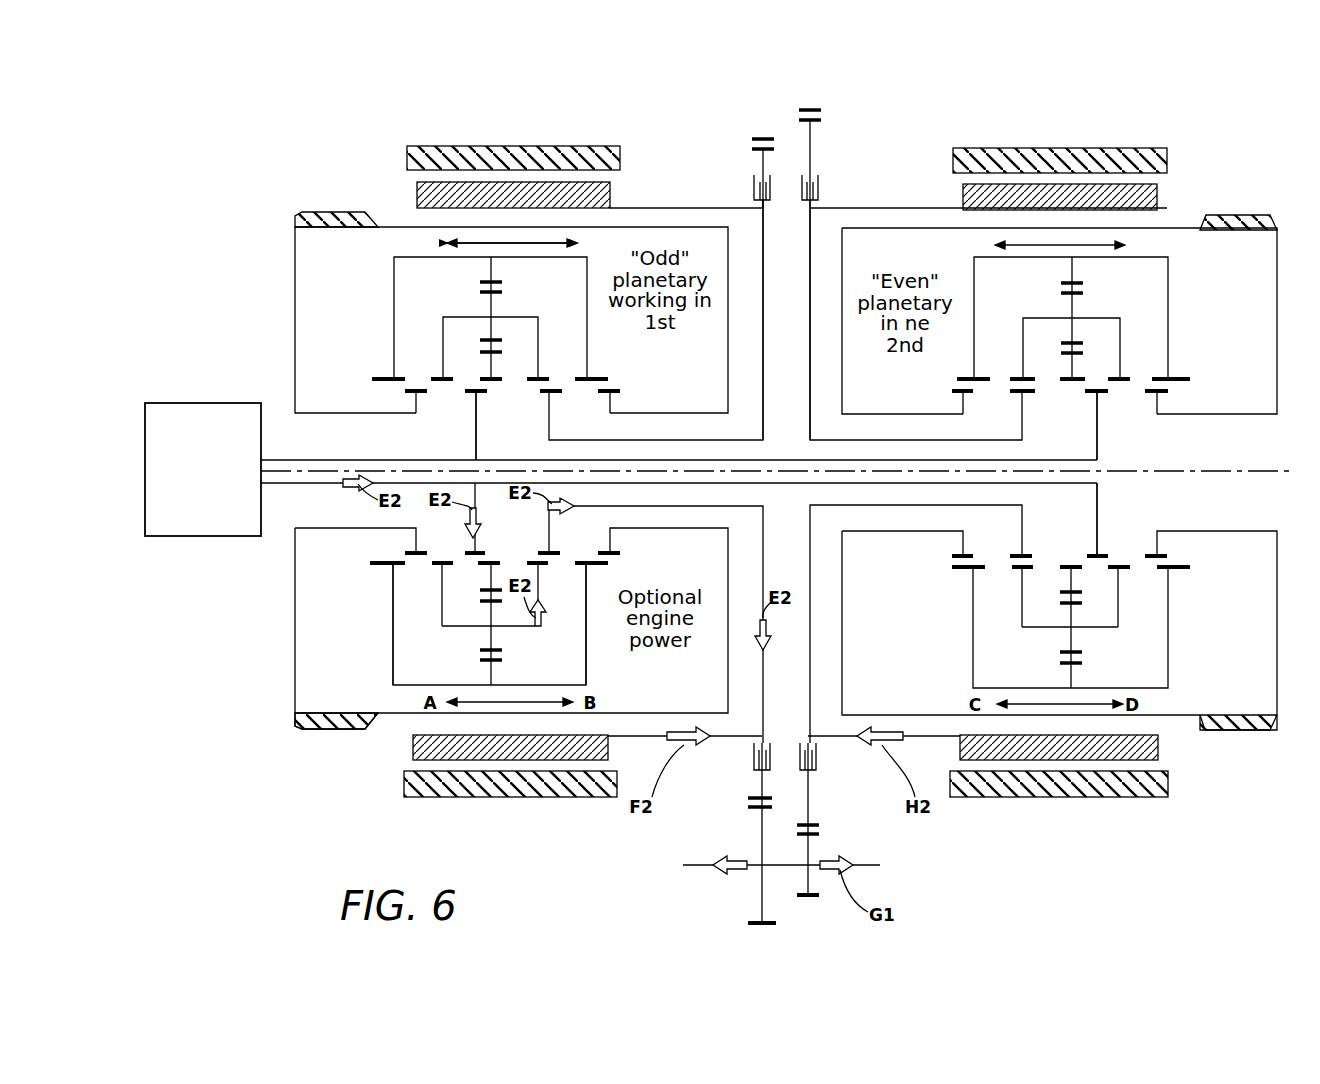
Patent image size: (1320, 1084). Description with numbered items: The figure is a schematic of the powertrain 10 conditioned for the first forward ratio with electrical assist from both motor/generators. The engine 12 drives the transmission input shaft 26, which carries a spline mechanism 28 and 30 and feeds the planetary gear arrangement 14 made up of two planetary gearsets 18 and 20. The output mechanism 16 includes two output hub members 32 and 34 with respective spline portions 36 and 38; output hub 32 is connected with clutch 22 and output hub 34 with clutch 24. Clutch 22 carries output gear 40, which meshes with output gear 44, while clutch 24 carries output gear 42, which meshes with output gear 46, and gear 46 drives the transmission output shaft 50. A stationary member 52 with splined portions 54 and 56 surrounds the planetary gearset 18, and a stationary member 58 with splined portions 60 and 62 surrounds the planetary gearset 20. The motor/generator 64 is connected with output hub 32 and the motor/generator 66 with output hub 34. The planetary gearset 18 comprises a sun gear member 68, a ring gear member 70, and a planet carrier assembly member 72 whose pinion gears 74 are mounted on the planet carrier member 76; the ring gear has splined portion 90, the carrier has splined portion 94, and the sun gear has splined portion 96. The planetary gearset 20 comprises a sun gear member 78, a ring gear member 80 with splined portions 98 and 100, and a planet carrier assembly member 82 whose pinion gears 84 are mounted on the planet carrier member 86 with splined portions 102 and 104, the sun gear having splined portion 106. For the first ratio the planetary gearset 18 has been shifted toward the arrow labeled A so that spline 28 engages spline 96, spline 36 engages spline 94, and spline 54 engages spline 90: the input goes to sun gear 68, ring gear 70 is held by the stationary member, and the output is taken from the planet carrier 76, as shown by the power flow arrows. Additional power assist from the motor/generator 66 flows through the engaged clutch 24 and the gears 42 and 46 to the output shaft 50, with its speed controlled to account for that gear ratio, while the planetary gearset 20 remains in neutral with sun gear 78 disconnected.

The powertrain 10 is at (216, 320).
The engine 12 is at (213, 400).
The planetary gear arrangement 14 is at (777, 127).
The output mechanism 16 is at (748, 742).
The planetary gearset 18 is at (426, 366).
The planetary gearset 20 is at (1183, 335).
The clutch 22 is at (750, 773).
The clutch 24 is at (819, 772).
The transmission input shaft 26 is at (296, 484).
The spline mechanism 28 is at (478, 393).
The spline mechanism 30 is at (1098, 393).
The output hub member 32 is at (764, 415).
The output hub member 34 is at (810, 362).
The spline portion 36 is at (552, 393).
The spline portion 38 is at (1025, 553).
The output gear 40 is at (750, 812).
The output gear 42 is at (822, 830).
The output gear 44 is at (700, 867).
The output gear 46 is at (812, 898).
The transmission output shaft 50 is at (858, 868).
The stationary housing or member 52 is at (385, 226).
The splined portion 54 is at (615, 391).
The splined portion 56 is at (405, 391).
The stationary housing or member 58 is at (1183, 229).
The splined portion 60 is at (1166, 392).
The splined portion 62 is at (955, 558).
The motor/generator 64 is at (430, 145).
The motor/generator 66 is at (1069, 800).
The sun gear member 68 is at (492, 366).
The ring gear member 70 is at (499, 282).
The planet carrier assembly member 72 is at (457, 310).
The pinion gears 74 is at (497, 292).
The planet carrier member 76 is at (462, 628).
The sun gear member 78 is at (1066, 364).
The ring gear member 80 is at (1063, 283).
The planet carrier assembly member 82 is at (1106, 312).
The pinion gears 84 is at (1066, 293).
The planet carrier member 86 is at (1060, 630).
The splined portion 90 is at (598, 379).
The splined portion 94 is at (541, 566).
The splined portion 96 is at (488, 392).
The splined portion 98 is at (958, 569).
The splined portion 100 is at (1180, 380).
The splined portion 102 is at (1015, 570).
The splined portion 104 is at (1130, 379).
The splined portion 106 is at (1070, 566).